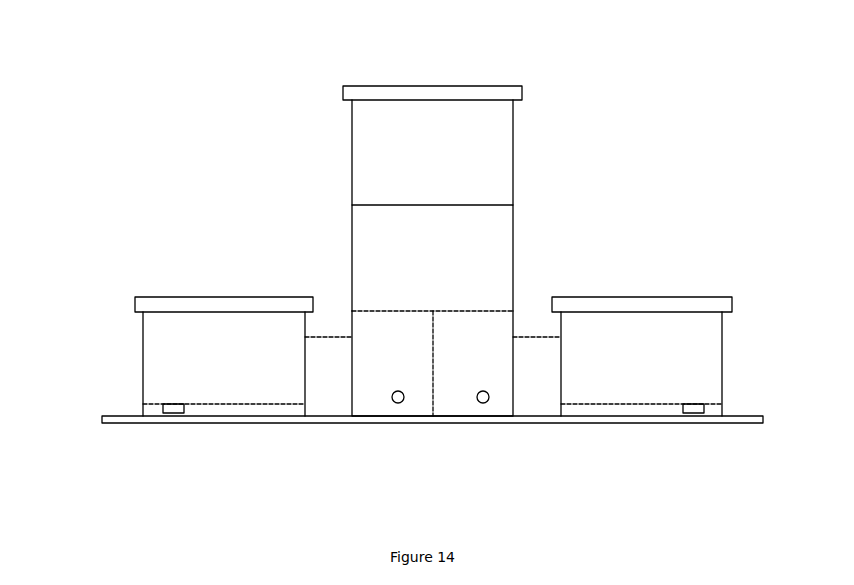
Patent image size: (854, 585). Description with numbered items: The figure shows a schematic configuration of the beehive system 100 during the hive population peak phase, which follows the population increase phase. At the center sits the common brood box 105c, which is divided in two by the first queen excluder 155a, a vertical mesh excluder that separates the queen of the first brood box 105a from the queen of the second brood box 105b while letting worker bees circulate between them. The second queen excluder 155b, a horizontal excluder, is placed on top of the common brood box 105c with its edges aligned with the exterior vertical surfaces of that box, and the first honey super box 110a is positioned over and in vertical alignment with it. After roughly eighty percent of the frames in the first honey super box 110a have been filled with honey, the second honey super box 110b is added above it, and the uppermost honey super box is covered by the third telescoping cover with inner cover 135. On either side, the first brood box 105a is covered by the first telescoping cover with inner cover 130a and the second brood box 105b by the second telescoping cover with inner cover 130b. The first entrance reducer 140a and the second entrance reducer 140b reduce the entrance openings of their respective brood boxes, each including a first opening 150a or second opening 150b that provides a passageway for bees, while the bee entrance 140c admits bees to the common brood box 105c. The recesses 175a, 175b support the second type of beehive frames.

The beehive system 100 is at (76, 79).
The third telescoping cover with inner cover 135 is at (458, 97).
The second honey super box 110b is at (365, 133).
The first honey super box 110a is at (494, 222).
The second queen excluder 155b is at (380, 307).
The first queen excluder 155a is at (433, 340).
The common brood box 105c is at (407, 383).
The bee entrance 140c is at (391, 394).
The recess 175b is at (337, 393).
The recess 175a is at (528, 381).
The second telescoping cover with inner cover 130b is at (160, 307).
The second brood box 105b is at (158, 363).
The second entrance reducer 140b is at (238, 410).
The second opening in the entrance reducer 150b is at (173, 408).
The first telescoping cover with inner cover 130a is at (680, 306).
The first brood box 105a is at (702, 364).
The first entrance reducer 140a is at (635, 408).
The first opening in the entrance reducer 150a is at (690, 407).